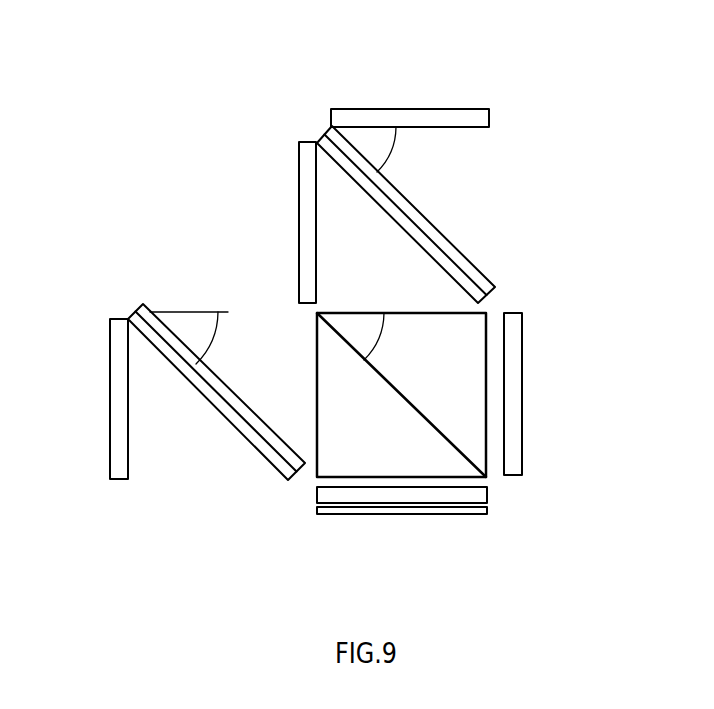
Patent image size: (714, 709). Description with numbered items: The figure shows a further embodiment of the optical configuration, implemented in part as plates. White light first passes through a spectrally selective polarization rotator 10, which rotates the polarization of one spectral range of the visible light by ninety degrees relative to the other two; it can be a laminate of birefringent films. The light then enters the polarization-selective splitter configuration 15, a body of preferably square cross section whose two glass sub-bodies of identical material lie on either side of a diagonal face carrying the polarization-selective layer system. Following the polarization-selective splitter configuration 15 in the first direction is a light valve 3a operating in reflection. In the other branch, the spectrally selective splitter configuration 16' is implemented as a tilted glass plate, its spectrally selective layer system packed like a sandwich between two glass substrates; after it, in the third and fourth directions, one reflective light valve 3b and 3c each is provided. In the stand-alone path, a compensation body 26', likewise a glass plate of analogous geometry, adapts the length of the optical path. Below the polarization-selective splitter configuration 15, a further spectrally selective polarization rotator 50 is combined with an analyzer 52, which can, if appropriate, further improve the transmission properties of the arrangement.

The light valve 3a is at (122, 383).
The light valve 3b is at (308, 196).
The light valve 3c is at (427, 117).
The spectrally selective splitter configuration 16' is at (406, 214).
The compensation body 26' is at (216, 392).
The polarization-selective splitter configuration 15 is at (448, 376).
The spectrally selective polarization rotator 10 is at (515, 366).
The further spectrally selective polarization rotator 50 is at (455, 494).
The analyzer 52 is at (394, 510).